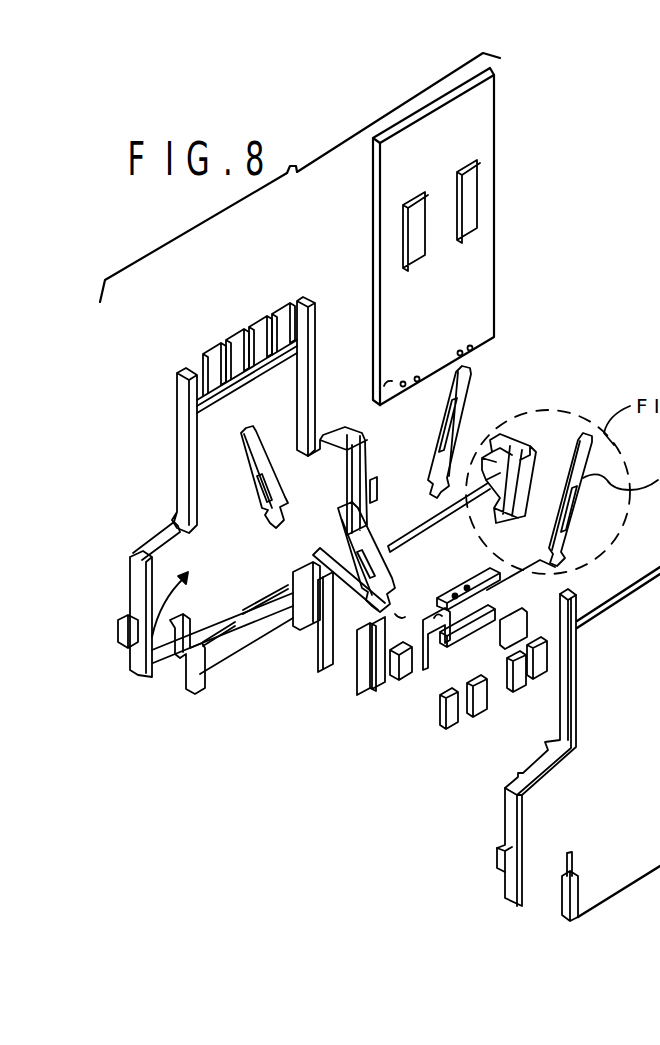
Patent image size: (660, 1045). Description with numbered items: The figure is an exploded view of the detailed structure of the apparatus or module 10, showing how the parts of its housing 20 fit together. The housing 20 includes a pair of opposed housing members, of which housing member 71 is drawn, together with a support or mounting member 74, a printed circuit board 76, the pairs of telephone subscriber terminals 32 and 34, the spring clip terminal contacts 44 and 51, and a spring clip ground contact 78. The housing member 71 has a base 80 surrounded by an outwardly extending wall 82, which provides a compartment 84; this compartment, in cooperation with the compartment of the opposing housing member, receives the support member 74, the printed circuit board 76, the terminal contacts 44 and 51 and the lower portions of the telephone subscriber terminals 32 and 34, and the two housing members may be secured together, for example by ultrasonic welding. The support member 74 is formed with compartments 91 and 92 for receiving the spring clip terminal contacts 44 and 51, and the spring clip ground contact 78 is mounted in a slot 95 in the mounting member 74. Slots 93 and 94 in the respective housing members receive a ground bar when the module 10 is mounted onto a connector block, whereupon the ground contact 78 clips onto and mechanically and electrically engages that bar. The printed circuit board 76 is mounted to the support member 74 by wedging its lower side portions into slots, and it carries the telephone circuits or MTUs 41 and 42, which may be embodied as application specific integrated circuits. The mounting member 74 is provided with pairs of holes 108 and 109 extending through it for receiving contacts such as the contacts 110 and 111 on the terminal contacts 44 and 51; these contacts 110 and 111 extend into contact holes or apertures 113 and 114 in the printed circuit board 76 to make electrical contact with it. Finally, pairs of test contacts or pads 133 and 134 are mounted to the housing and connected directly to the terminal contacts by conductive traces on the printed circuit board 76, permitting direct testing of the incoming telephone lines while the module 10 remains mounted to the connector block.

The apparatus or module 10 is at (559, 348).
The housing 20 is at (145, 492).
The telephone subscriber terminal 32 is at (257, 487).
The telephone subscriber terminal 34 is at (470, 382).
The telephone circuit or MTU 41 is at (404, 226).
The telephone circuit or MTU 42 is at (470, 204).
The spring clip terminal contact 44 is at (482, 717).
The spring clip terminal contact 51 is at (533, 680).
The housing member 71 is at (175, 422).
The support or mounting member 74 is at (320, 653).
The printed circuit board 76 is at (495, 138).
The spring clip ground contact 78 is at (400, 683).
The base 80 is at (263, 559).
The outwardly extending wall 82 is at (133, 583).
The compartment 84 is at (128, 658).
The compartment 91 is at (427, 690).
The compartment 92 is at (492, 602).
The slot 93 is at (173, 640).
The slot 94 is at (562, 878).
The slot 95 is at (353, 667).
The hole 108 is at (398, 615).
The hole 109 is at (452, 592).
The contact 110 is at (457, 658).
The contact 111 is at (518, 623).
The contact hole or aperture 113 is at (406, 373).
The contact hole or aperture 114 is at (459, 349).
The test contact or pad 133 is at (204, 354).
The test contact or pad 134 is at (257, 328).